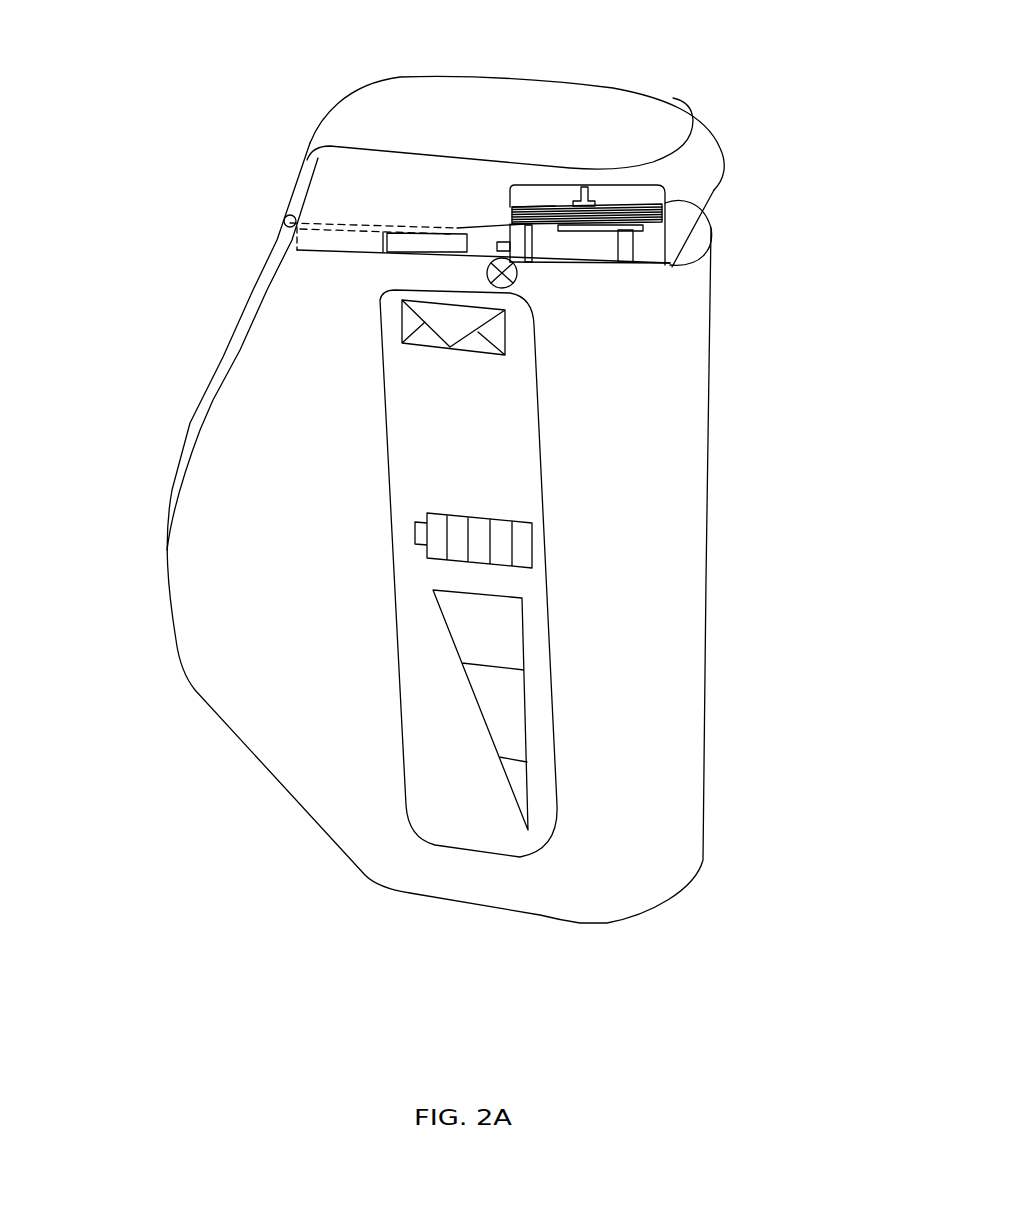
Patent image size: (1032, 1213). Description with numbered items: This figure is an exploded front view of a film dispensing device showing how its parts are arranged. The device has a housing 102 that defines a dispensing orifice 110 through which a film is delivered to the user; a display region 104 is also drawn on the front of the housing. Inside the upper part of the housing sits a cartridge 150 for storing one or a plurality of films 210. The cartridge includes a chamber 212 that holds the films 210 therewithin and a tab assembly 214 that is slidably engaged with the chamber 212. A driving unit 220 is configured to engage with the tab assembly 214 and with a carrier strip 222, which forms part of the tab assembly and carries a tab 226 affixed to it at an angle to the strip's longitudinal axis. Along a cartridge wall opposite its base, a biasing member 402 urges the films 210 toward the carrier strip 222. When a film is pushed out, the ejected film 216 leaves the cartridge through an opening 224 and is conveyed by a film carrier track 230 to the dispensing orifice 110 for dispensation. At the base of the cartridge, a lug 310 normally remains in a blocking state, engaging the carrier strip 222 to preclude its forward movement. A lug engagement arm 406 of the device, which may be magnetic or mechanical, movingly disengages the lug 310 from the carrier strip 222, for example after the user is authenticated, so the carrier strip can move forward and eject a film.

The housing 102 is at (703, 706).
The display 104 is at (390, 633).
The dispensing orifice 110 is at (283, 222).
The cartridge 150 is at (661, 185).
The films 210 is at (554, 206).
The chamber 212 is at (514, 187).
The tab assembly 214 is at (640, 245).
The ejected film 216 is at (458, 228).
The driving unit 220 is at (540, 262).
The carrier strip 222 is at (577, 262).
The opening 224 is at (502, 218).
The tab 226 is at (668, 266).
The film carrier track 230 is at (350, 251).
The lug 310 is at (515, 262).
The biasing member 402 is at (590, 187).
The lug engagement arm 406 is at (497, 243).